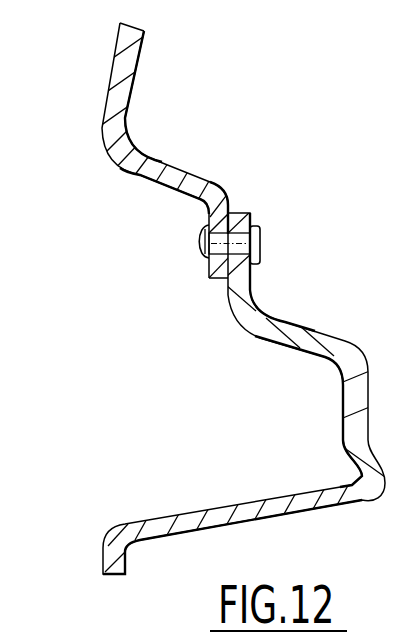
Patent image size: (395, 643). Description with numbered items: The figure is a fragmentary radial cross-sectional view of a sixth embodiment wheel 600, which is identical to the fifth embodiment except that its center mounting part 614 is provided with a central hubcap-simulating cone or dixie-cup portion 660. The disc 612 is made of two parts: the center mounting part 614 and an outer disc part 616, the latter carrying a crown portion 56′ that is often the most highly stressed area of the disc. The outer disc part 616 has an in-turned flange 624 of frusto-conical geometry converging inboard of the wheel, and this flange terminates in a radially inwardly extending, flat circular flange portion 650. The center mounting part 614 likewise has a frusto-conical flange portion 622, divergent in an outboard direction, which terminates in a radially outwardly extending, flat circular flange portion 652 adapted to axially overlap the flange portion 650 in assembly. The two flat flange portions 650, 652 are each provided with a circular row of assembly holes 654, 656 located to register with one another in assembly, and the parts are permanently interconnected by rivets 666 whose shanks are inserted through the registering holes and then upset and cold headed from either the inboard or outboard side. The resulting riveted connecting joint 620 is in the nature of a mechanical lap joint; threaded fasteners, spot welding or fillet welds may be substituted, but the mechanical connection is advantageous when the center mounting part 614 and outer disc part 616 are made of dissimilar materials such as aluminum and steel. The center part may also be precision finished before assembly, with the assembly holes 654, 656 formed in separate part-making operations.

The wheel 600 is at (225, 228).
The disc 612 is at (112, 53).
The center mounting part 614 is at (338, 417).
The outer disc part 616 is at (106, 108).
The riveted connecting joint 620 is at (198, 286).
The frusto-conical flange portion 622 is at (311, 330).
The in-turned flange 624 is at (147, 185).
The flat circular flange portion 650 is at (208, 282).
The flat circular flange portion 652 is at (240, 211).
The assembly holes 654 is at (222, 232).
The assembly holes 656 is at (250, 273).
The dixie-cup portion 660 is at (217, 503).
The rivets 666 is at (197, 240).
The crown portion 56′ is at (106, 147).